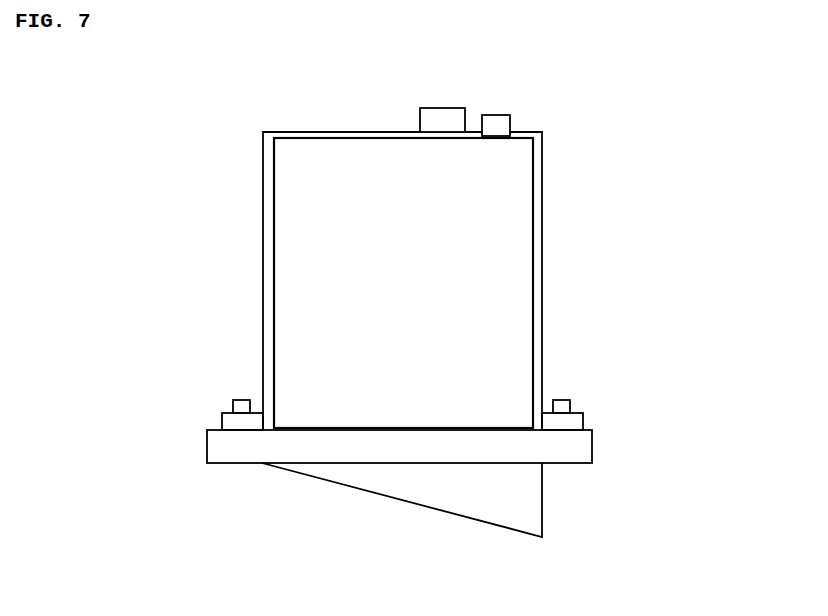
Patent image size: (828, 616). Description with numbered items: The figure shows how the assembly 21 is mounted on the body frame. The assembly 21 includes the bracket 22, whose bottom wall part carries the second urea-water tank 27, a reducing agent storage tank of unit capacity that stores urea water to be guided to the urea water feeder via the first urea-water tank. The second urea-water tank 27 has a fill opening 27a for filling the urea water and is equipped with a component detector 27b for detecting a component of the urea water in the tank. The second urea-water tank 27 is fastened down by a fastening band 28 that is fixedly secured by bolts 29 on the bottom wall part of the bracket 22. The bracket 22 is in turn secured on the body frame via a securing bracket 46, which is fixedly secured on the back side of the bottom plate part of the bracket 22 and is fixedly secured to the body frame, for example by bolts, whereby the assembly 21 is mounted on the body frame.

The assembly 21 is at (542, 285).
The bracket 22 is at (308, 447).
The second urea-water tank 27 is at (363, 255).
The fill opening 27a is at (497, 115).
The component detector 27b is at (445, 108).
The fastening band 28 is at (542, 210).
The bolts 29 is at (240, 398).
The securing bracket 46 is at (422, 508).